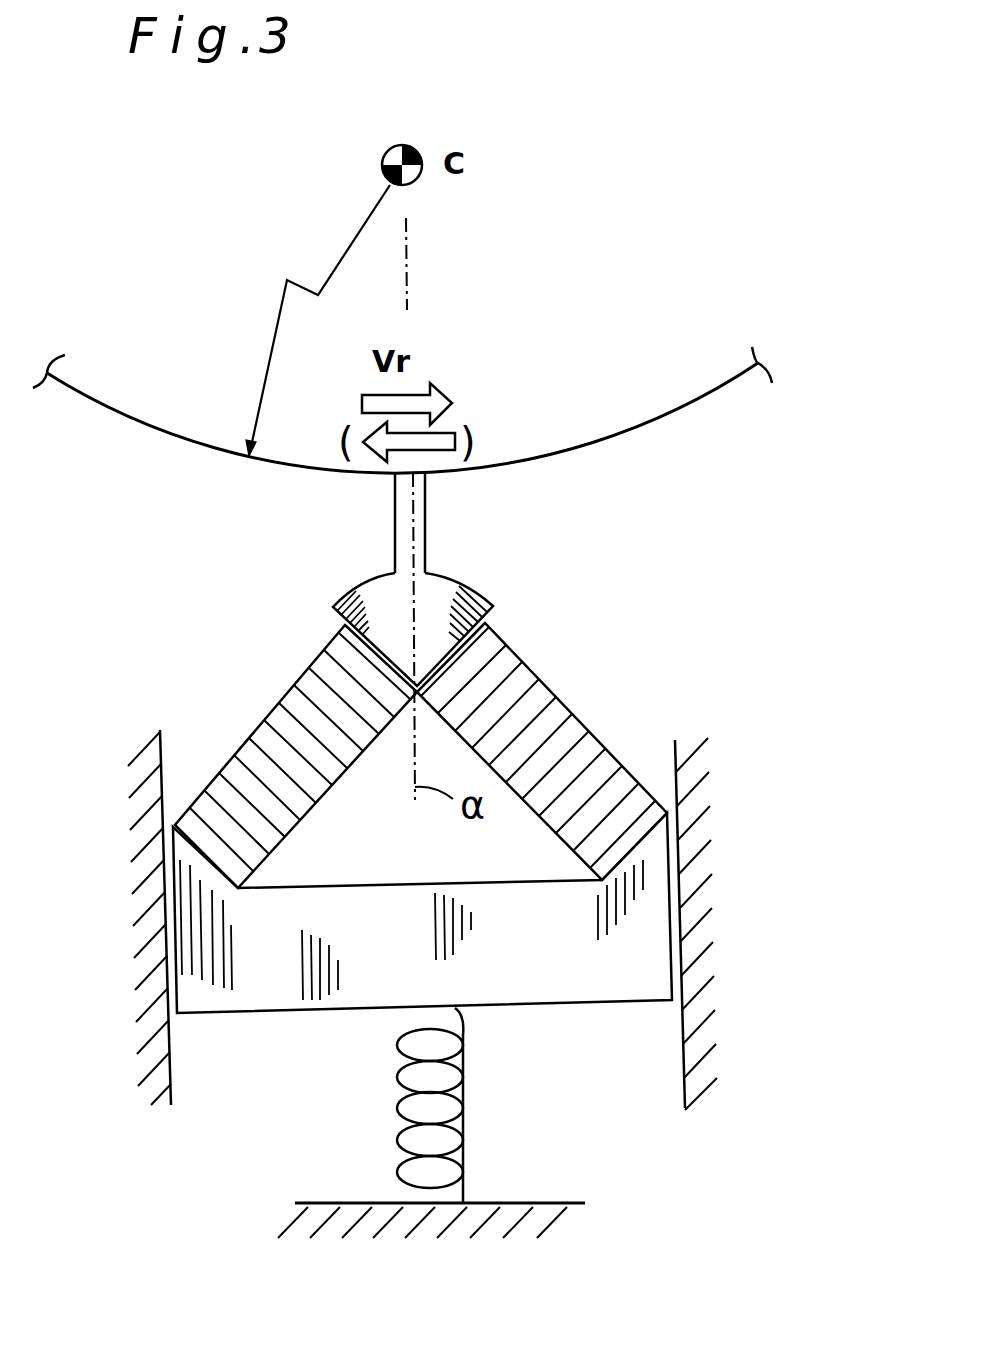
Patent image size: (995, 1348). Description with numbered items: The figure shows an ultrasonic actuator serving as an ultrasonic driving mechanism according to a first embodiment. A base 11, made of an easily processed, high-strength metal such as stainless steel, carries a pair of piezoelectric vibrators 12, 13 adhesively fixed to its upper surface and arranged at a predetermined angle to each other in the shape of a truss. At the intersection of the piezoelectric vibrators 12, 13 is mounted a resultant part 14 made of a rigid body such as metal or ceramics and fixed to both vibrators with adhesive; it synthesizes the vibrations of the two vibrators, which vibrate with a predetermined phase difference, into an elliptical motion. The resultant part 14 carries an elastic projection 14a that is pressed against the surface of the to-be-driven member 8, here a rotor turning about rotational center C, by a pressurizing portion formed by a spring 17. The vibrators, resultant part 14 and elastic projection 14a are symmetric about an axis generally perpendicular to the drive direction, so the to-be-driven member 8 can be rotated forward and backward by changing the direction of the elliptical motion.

The to-be-driven member 8 is at (726, 340).
The base 11 is at (637, 949).
The piezoelectric vibrator 12 is at (587, 728).
The piezoelectric vibrator 13 is at (253, 747).
The resultant part 14 is at (455, 594).
The elastic projection 14a is at (427, 524).
The spring 17 is at (467, 1122).